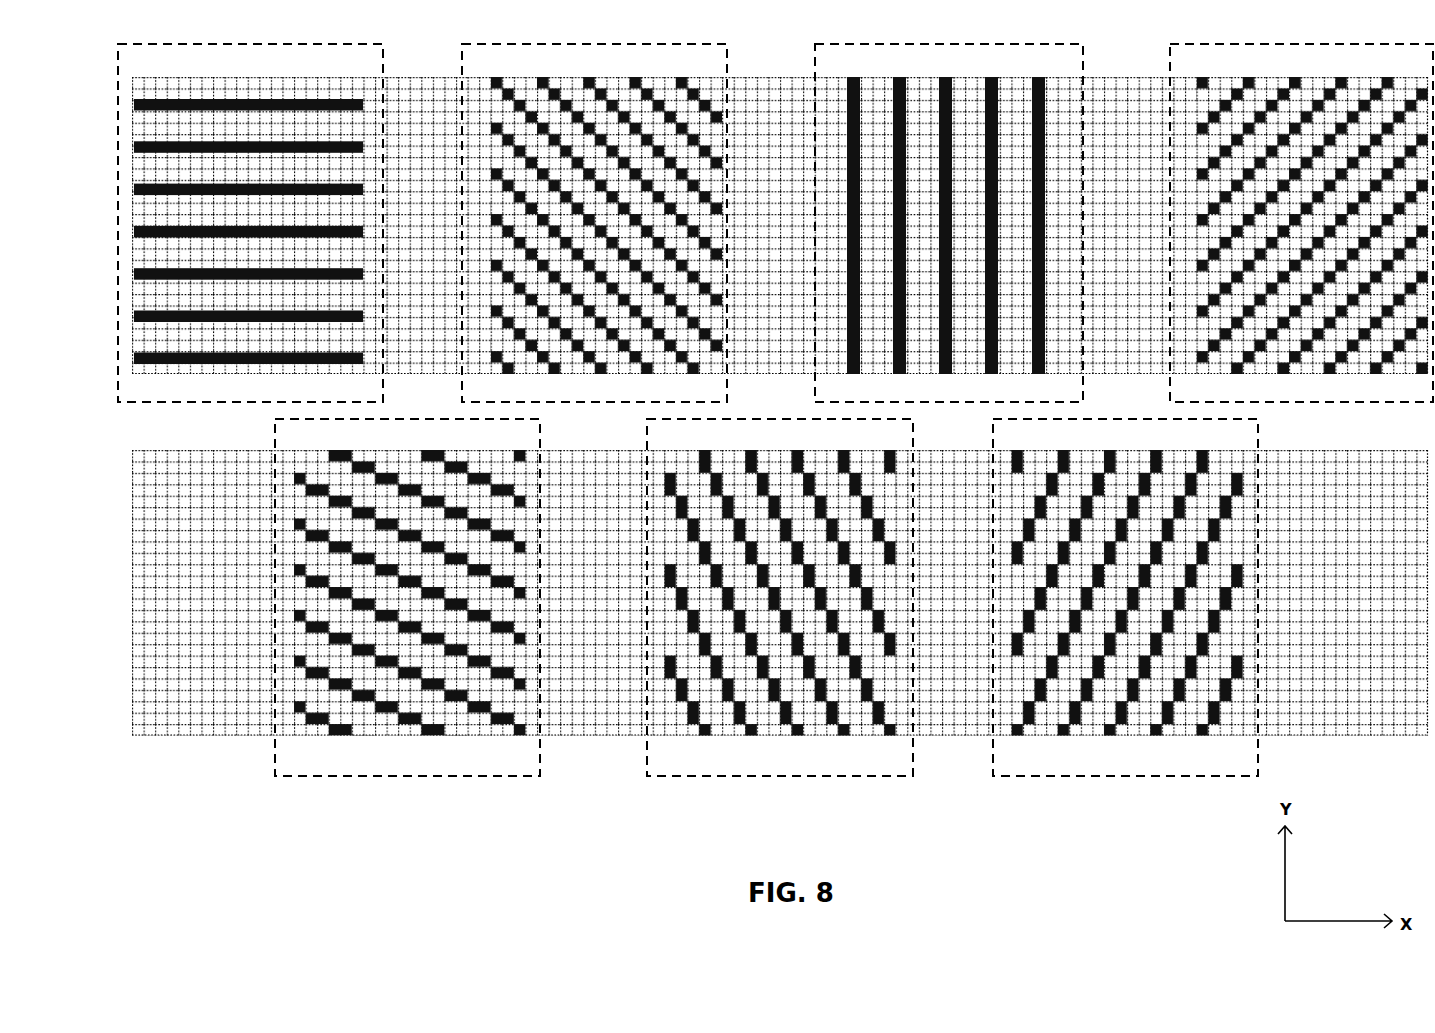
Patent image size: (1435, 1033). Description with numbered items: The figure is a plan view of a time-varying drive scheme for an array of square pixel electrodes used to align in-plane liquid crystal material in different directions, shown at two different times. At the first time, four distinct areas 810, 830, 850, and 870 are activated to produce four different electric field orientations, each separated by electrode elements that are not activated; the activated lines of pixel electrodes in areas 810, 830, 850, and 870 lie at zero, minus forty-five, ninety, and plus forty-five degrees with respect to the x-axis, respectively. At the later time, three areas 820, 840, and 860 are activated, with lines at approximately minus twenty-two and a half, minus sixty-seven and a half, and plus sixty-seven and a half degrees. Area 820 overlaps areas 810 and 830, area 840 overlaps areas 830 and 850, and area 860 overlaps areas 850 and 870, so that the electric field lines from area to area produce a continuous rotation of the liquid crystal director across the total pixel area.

The activated area 810 is at (247, 44).
The activated area 820 is at (407, 776).
The activated area 830 is at (597, 44).
The activated area 840 is at (780, 776).
The activated area 850 is at (938, 44).
The activated area 860 is at (1122, 776).
The activated area 870 is at (1305, 44).